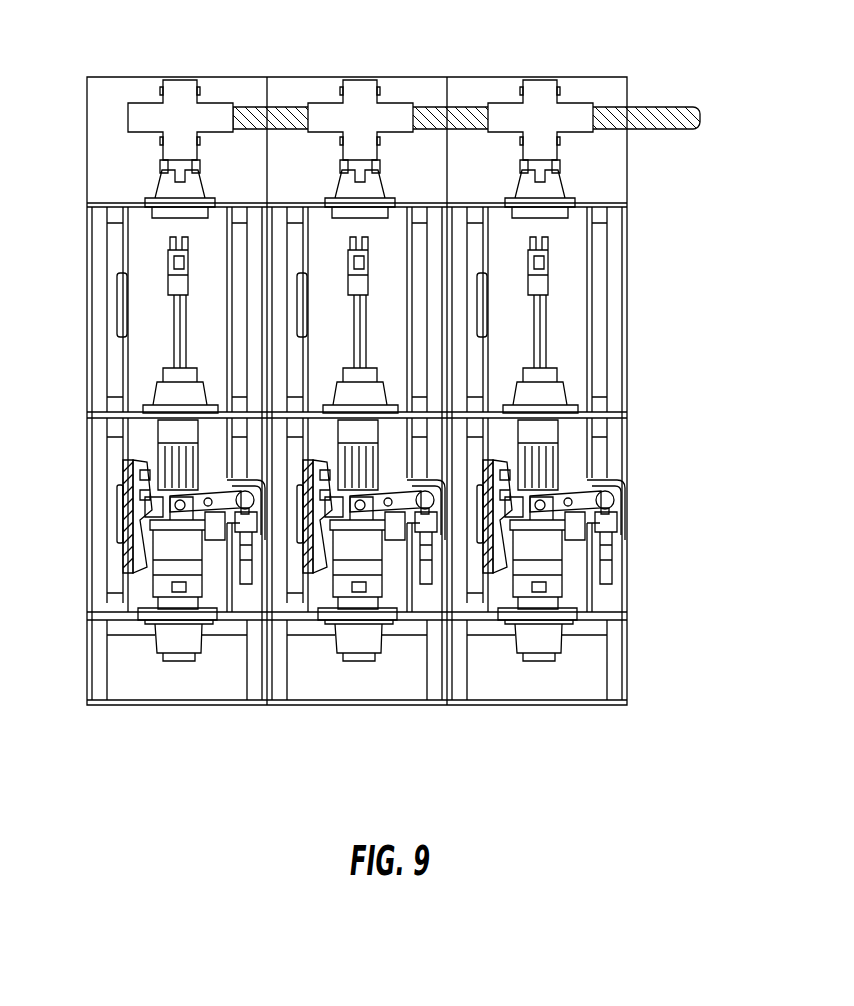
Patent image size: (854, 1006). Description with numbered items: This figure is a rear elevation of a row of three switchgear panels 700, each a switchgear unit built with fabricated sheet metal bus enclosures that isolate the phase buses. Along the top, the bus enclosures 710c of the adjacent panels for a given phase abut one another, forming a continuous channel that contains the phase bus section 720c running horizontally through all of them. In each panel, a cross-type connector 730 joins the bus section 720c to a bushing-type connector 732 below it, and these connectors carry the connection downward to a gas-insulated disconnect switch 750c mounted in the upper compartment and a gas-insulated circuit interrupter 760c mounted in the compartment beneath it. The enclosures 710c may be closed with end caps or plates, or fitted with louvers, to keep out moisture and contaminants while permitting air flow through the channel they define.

The switchgear unit 700 is at (385, 387).
The bus enclosure 710c is at (120, 77).
The phase bus section 720c is at (250, 106).
The cross-type connector 730 is at (573, 105).
The bushing-type connector 732 is at (614, 183).
The gas-insulated disconnect switch 750c is at (621, 312).
The gas-insulated circuit interrupter 760c is at (628, 436).